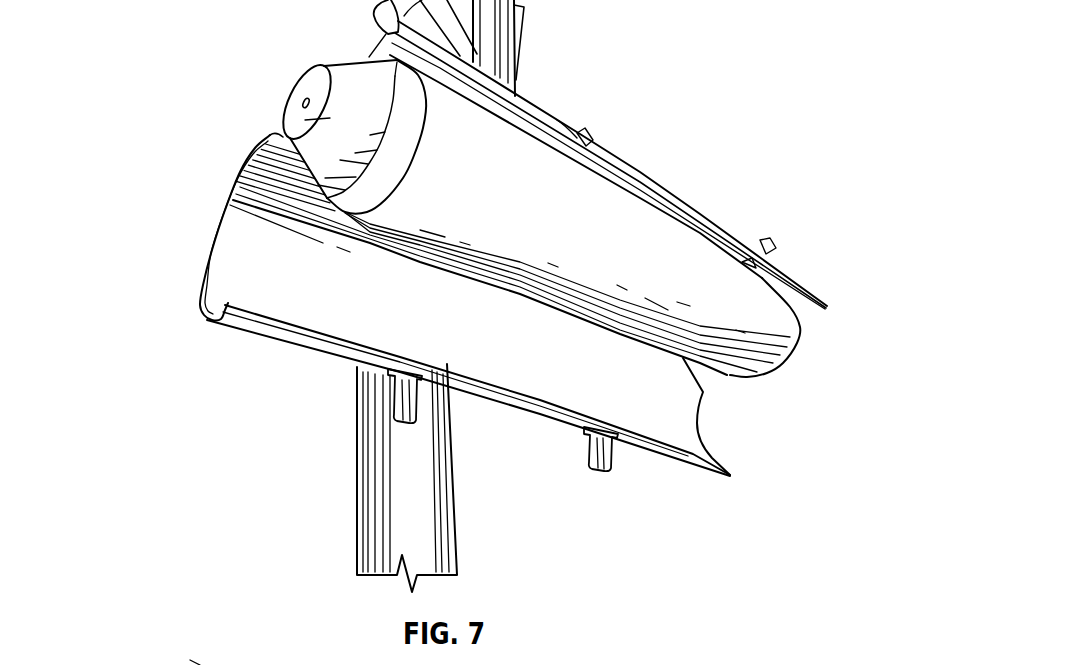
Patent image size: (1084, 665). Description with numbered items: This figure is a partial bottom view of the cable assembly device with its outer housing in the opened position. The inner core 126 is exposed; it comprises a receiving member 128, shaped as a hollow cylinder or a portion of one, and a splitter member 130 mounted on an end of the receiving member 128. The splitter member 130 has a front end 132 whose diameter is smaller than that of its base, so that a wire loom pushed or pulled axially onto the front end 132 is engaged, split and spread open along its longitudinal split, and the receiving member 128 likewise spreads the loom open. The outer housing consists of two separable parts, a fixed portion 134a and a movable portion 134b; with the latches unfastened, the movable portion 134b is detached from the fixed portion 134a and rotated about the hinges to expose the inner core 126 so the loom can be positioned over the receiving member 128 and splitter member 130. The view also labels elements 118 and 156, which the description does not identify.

The support post 118 is at (620, 664).
The inner core 126 is at (796, 370).
The receiving member 128 is at (650, 240).
The splitter member 130 is at (325, 148).
The front end 132 is at (301, 100).
The fixed portion 134a is at (527, 107).
The movable portion 134b is at (247, 326).
The bracket 156 is at (195, 664).